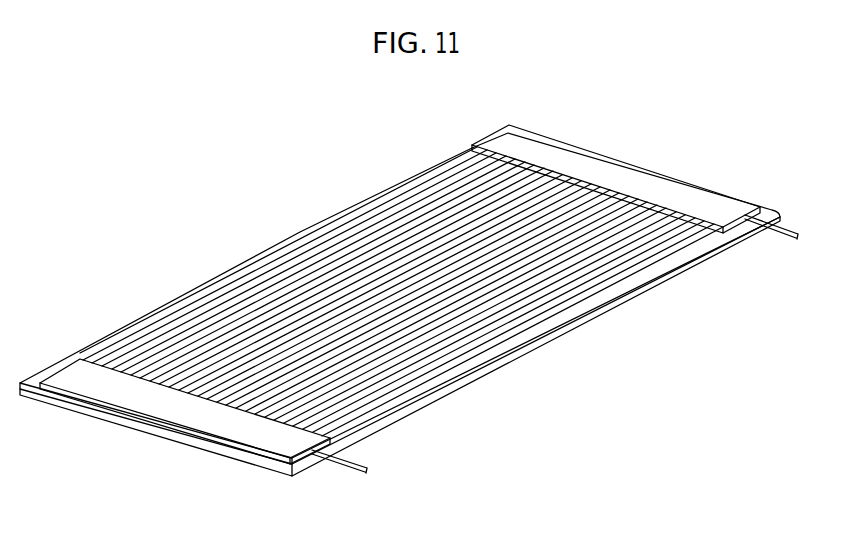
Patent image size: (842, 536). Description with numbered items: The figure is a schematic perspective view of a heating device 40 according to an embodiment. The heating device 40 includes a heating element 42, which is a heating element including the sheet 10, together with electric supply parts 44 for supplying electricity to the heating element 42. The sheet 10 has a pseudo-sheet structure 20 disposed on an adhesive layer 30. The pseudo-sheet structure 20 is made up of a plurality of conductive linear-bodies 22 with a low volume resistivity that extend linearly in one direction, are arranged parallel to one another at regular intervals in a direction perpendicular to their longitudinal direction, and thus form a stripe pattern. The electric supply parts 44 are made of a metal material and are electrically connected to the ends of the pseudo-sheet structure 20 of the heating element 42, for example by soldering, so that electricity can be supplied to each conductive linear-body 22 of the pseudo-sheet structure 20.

The heating device 40 is at (221, 182).
The heating element 42 is at (140, 297).
The sheet 10 is at (400, 291).
The conductive linear-bodies 22 is at (163, 353).
The electric supply parts 44 is at (623, 172).
The pseudo-sheet structure 20 is at (520, 343).
The adhesive layer 30 is at (443, 401).